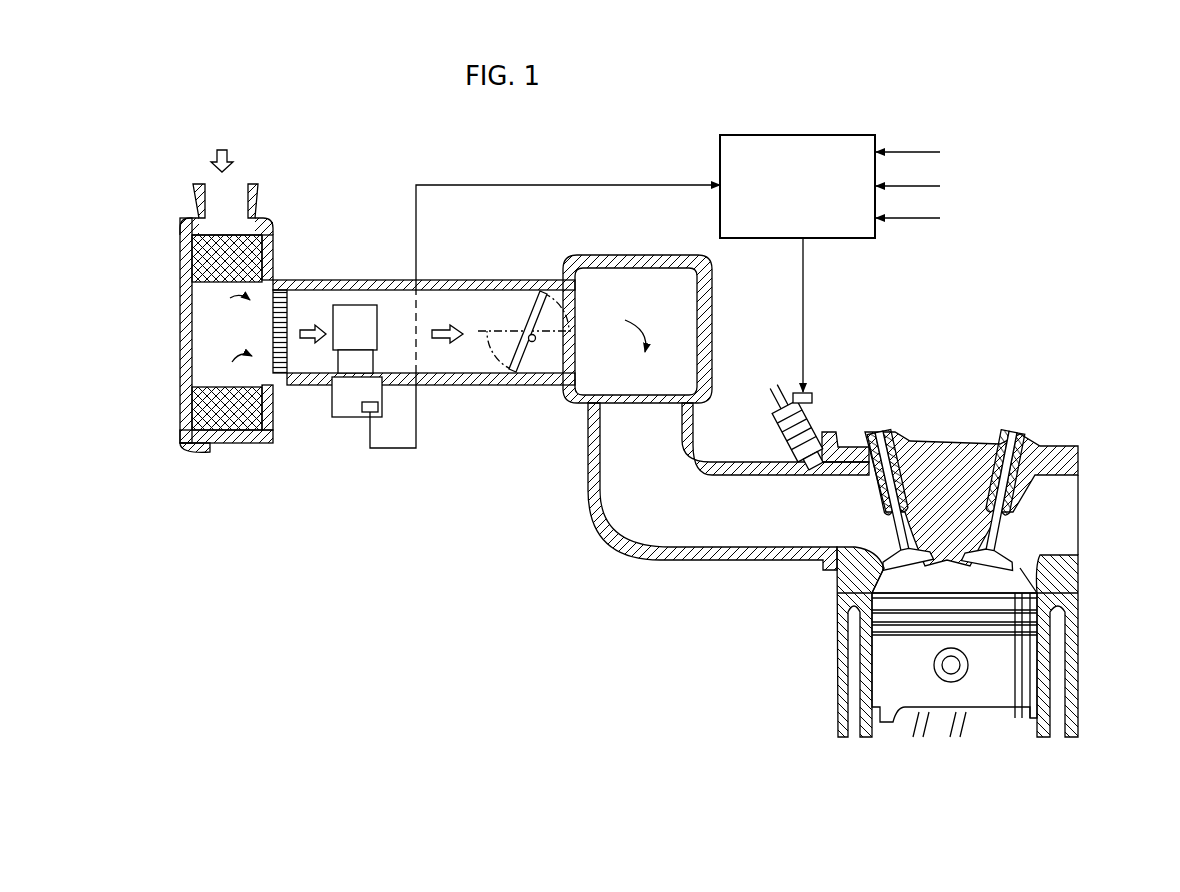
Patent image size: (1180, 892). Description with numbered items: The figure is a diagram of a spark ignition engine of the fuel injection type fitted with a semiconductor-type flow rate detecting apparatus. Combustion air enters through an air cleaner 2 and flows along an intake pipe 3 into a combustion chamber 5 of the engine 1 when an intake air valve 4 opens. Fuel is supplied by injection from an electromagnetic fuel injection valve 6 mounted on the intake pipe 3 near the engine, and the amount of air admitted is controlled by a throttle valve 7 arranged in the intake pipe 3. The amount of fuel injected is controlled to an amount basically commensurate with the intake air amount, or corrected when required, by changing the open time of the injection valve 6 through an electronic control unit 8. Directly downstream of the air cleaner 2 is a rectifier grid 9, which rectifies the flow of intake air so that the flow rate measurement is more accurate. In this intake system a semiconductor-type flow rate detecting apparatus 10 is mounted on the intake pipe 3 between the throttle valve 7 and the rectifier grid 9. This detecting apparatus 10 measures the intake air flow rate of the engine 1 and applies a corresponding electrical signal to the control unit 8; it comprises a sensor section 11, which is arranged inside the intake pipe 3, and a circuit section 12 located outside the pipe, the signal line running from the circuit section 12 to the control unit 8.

The engine 1 is at (924, 571).
The air cleaner 2 is at (183, 412).
The intake pipe 3 is at (470, 386).
The intake air valve 4 is at (917, 556).
The combustion chamber 5 is at (956, 590).
The electromagnetic fuel injection valve 6 is at (812, 413).
The throttle valve 7 is at (530, 330).
The electronic control unit 8 is at (843, 135).
The rectifier grid 9 is at (283, 387).
The semiconductor-type flow rate detecting apparatus 10 is at (350, 421).
The sensor section 11 is at (359, 305).
The circuit section 12 is at (340, 394).